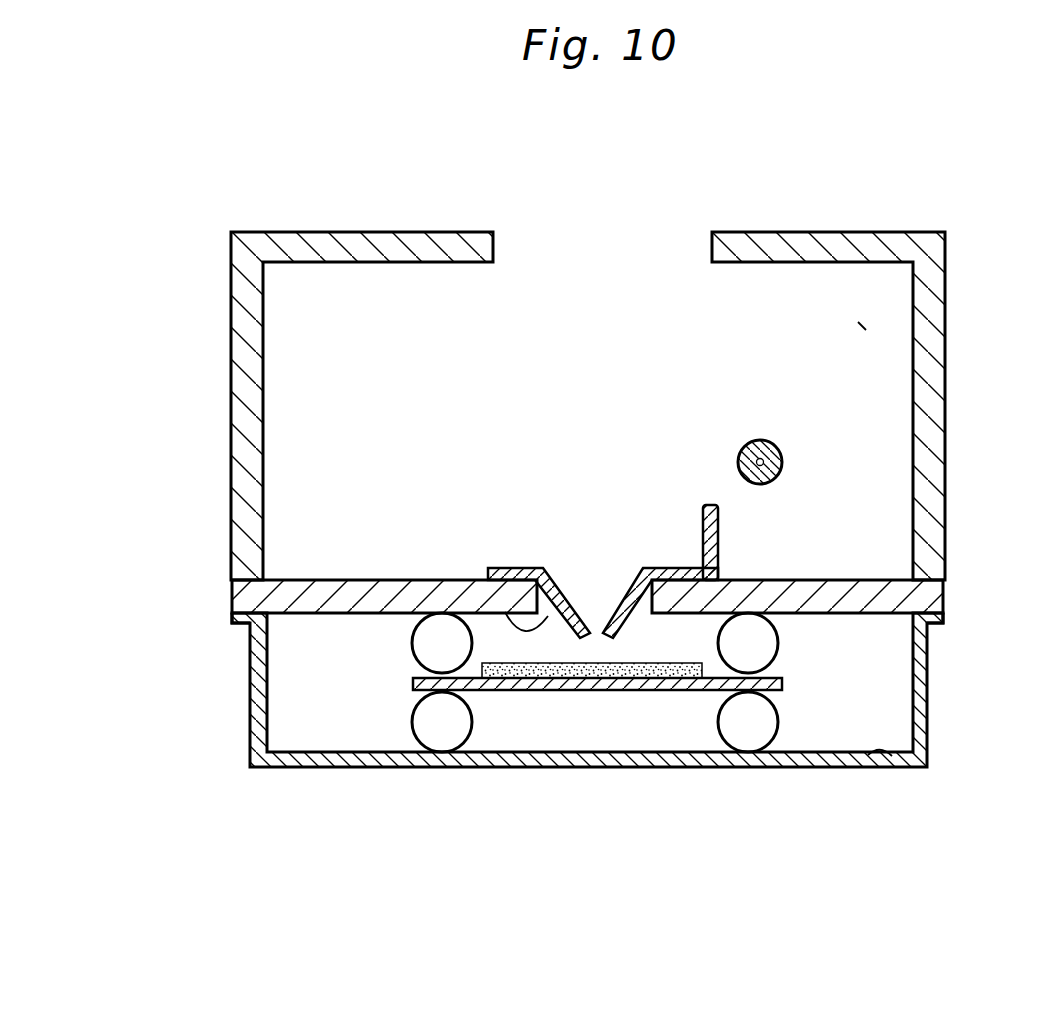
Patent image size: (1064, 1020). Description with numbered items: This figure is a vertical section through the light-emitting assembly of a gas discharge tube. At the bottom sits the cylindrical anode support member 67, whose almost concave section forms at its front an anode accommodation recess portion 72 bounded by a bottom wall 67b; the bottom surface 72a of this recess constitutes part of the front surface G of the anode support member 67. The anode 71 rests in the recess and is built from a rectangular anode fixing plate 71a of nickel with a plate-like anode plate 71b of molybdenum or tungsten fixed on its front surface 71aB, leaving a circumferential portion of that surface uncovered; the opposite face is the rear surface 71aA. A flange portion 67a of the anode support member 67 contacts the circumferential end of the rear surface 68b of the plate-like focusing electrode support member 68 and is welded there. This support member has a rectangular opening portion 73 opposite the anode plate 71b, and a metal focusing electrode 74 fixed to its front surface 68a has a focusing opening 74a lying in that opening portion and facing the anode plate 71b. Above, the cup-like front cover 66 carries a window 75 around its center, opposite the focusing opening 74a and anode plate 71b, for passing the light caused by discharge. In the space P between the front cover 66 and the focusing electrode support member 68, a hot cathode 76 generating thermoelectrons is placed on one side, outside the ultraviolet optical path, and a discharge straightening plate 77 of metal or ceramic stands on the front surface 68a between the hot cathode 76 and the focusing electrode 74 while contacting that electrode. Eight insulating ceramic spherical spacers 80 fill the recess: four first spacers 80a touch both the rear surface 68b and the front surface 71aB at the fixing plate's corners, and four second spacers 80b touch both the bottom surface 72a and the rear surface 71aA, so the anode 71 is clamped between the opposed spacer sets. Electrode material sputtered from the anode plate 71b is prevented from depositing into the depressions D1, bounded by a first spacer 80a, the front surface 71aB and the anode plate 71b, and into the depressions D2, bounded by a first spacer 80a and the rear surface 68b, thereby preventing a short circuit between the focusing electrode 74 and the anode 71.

The front cover 66 is at (933, 372).
The anode support member 67 is at (925, 748).
The flange portion 67a is at (235, 627).
The bottom wall 67b is at (808, 767).
The focusing electrode support member 68 is at (230, 595).
The front surface of the focusing electrode support member 68a is at (312, 580).
The rear surface of the focusing electrode support member 68b is at (323, 617).
The anode 71 is at (608, 766).
The anode fixing plate 71a is at (608, 774).
The rear surface of the anode fixing plate 71aA is at (540, 695).
The front surface of the anode fixing plate 71aB is at (497, 695).
The anode plate 71b is at (583, 695).
The anode accommodation recess portion 72 is at (897, 665).
The bottom surface of the anode accommodation recess portion 72a is at (887, 767).
The opening portion 73 is at (536, 628).
The focusing electrode 74 is at (508, 573).
The focusing opening 74a is at (597, 593).
The window 75 is at (598, 275).
The hot cathode 76 is at (783, 452).
The discharge straightening plate 77 is at (720, 553).
The spherical spacers 80 is at (592, 682).
The first spacers 80a is at (425, 655).
The second spacers 80b is at (428, 712).
The space P is at (858, 322).
The front surface of the anode support member G is at (945, 600).
The depressions D1 is at (453, 692).
The depressions D2 is at (478, 617).